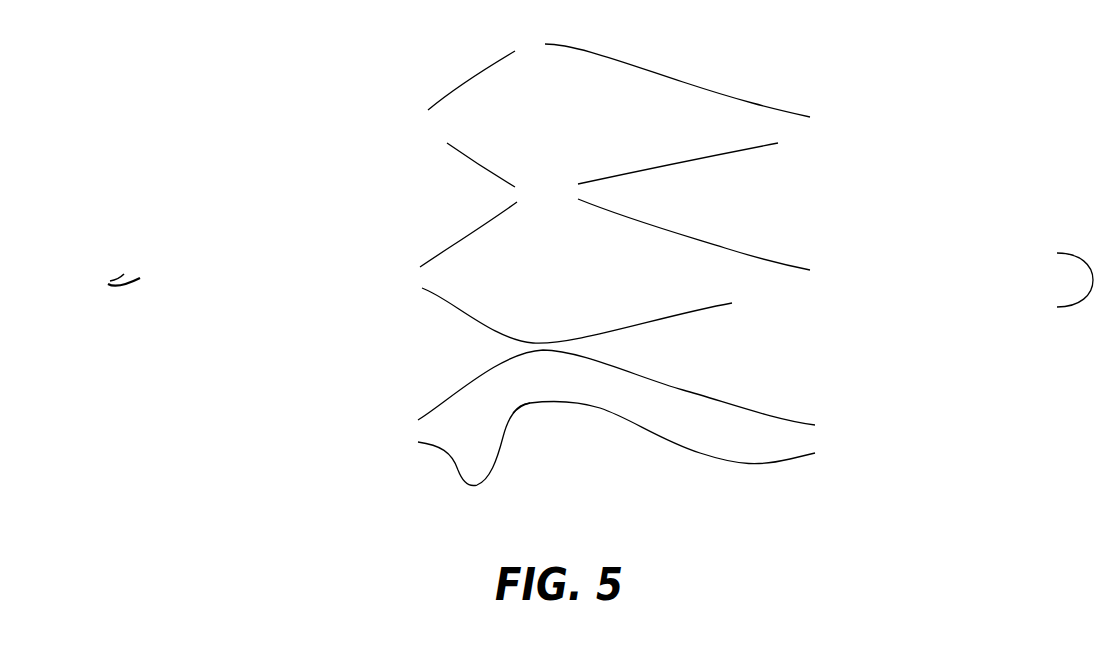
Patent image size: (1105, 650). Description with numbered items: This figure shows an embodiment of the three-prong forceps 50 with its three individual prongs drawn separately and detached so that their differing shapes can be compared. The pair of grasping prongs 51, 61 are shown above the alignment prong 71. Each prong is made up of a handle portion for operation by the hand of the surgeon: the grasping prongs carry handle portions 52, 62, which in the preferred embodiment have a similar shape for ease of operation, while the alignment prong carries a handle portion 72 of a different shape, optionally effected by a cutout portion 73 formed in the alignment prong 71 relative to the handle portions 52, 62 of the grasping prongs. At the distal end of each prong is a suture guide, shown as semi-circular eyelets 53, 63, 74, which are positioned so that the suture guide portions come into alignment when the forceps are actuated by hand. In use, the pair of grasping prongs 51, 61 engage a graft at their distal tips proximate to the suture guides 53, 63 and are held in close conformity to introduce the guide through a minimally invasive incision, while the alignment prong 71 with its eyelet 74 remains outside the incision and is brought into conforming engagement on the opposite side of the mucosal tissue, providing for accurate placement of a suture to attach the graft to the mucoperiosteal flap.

The airfoil profile set 50 is at (85, 277).
The grasping prong 51 is at (683, 97).
The handle portion 52 is at (628, 157).
The suture guide 53 is at (479, 120).
The grasping prong 61 is at (682, 248).
The handle portion 62 is at (628, 313).
The suture guide 63 is at (123, 288).
The alignment prong 71 is at (682, 397).
The handle portion 72 is at (637, 408).
The cutout portion 73 is at (527, 408).
The suture guide 74 is at (481, 417).